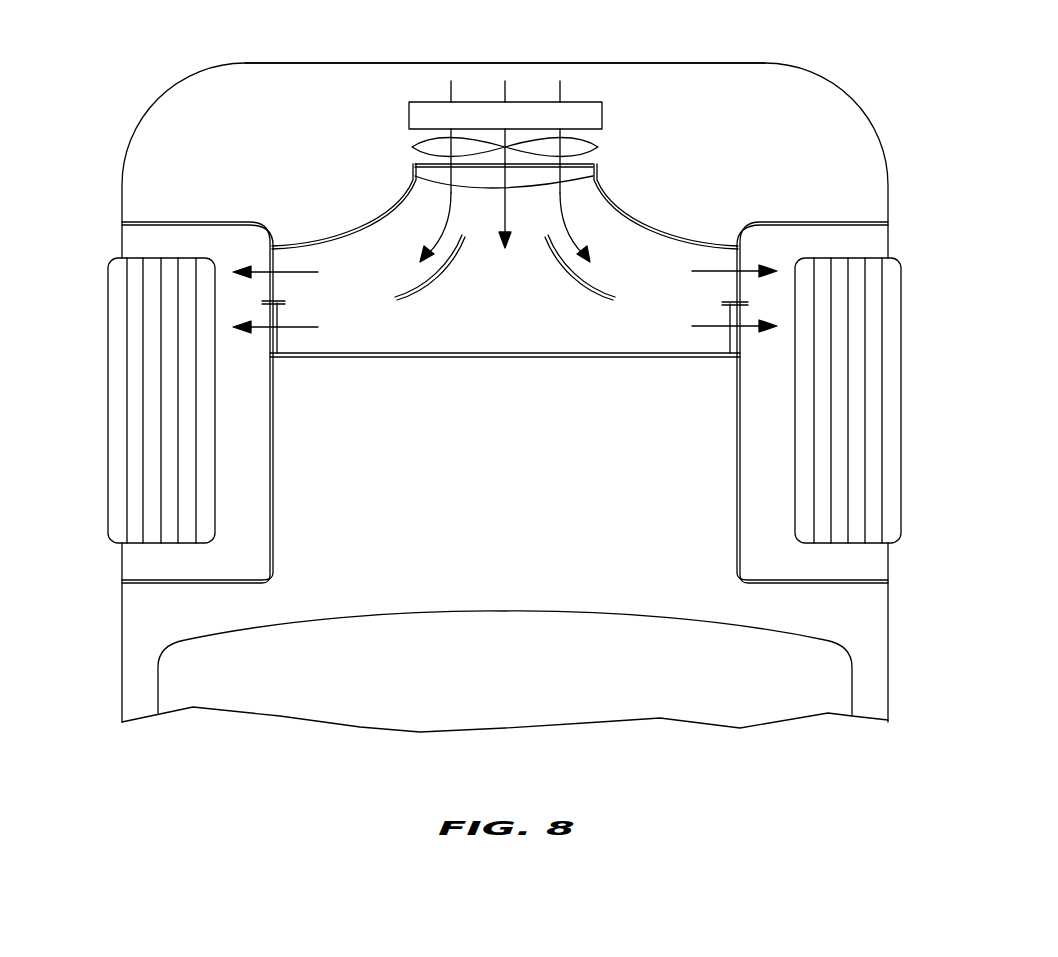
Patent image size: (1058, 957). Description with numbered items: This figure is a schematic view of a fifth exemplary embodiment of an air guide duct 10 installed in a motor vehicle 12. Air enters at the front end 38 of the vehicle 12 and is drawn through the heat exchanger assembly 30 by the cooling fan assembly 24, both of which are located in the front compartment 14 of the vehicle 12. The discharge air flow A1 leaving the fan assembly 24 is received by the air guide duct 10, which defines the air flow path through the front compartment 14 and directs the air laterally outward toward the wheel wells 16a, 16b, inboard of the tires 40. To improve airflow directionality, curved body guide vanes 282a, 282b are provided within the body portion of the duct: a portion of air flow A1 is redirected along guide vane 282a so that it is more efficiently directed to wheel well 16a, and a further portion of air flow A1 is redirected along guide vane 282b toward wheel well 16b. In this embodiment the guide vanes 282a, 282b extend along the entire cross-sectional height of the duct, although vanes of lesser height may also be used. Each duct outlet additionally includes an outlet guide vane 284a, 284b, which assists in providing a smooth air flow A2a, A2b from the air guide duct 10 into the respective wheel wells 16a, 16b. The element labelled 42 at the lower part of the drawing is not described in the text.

The motor vehicle 12 is at (835, 58).
The front end 38 is at (340, 63).
The heat exchanger assembly 30 is at (602, 115).
The cooling fan assembly 24 is at (580, 149).
The discharge air flow A1 is at (455, 194).
The air flow A2a is at (292, 272).
The air flow A2b is at (713, 271).
The body guide vane 282a is at (428, 290).
The body guide vane 282b is at (567, 274).
The outlet guide vane 284a is at (277, 335).
The outlet guide vane 284b is at (730, 338).
The tire 40 is at (135, 330).
The air guide duct 10 is at (430, 360).
The front compartment 14 is at (518, 508).
The wheel well 16a is at (147, 565).
The wheel well 16b is at (868, 563).
The bottom tray 42 is at (683, 698).